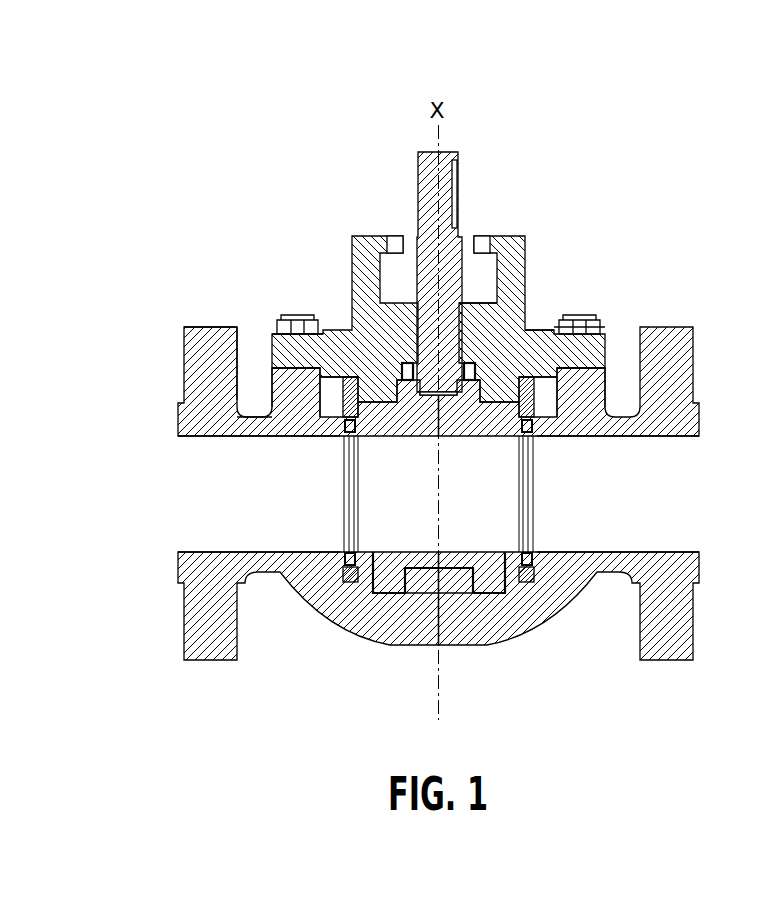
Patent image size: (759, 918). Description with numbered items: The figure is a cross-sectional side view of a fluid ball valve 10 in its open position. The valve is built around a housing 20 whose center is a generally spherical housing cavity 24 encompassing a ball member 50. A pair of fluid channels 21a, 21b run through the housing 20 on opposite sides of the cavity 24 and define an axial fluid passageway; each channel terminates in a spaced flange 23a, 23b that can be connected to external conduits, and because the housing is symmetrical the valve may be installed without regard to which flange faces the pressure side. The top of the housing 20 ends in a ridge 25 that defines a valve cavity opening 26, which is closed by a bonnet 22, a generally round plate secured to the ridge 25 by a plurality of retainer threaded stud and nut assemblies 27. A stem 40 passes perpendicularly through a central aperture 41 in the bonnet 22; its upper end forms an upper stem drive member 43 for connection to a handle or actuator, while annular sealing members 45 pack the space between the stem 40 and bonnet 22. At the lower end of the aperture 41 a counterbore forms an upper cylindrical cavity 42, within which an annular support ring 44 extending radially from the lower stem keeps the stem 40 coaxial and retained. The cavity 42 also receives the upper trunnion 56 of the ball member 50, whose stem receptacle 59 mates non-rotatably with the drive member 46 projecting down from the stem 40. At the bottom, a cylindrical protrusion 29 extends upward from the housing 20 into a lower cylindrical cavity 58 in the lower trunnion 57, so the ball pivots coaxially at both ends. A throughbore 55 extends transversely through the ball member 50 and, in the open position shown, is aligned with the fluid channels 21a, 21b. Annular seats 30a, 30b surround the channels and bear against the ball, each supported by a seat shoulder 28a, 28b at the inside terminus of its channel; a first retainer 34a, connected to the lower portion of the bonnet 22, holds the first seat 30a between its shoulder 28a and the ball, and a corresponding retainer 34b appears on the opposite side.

The ball valve 10 is at (228, 162).
The housing 20 is at (340, 625).
The fluid channel 21a is at (230, 517).
The fluid channel 21b is at (655, 520).
The bonnet 22 is at (508, 262).
The flange 23a is at (330, 397).
The flange 23b is at (535, 395).
The housing cavity 24 is at (484, 420).
The ridge 25 is at (557, 386).
The valve cavity opening 26 is at (290, 402).
The retainer threaded stud and nut assemblies 27 is at (272, 330).
The seat shoulder 28a is at (333, 566).
The seat shoulder 28b is at (548, 563).
The cylindrical protrusion 29 is at (452, 586).
The seat 30a is at (350, 454).
The seat 30b is at (530, 454).
The first retainer 34a is at (318, 377).
The second seat carrier 34b is at (520, 392).
The stem 40 is at (421, 192).
The aperture 41 is at (468, 323).
The upper cylindrical cavity 42 is at (522, 318).
The upper stem drive member 43 is at (455, 188).
The annular support ring 44 is at (395, 330).
The sealing members 45 is at (488, 305).
The drive member 46 is at (395, 275).
The ball member 50 is at (598, 323).
The throughbore 55 is at (482, 571).
The upper trunnion 56 is at (316, 320).
The lower trunnion 57 is at (345, 586).
The lower cylindrical cavity 58 is at (427, 568).
The stem receptacle 59 is at (410, 300).